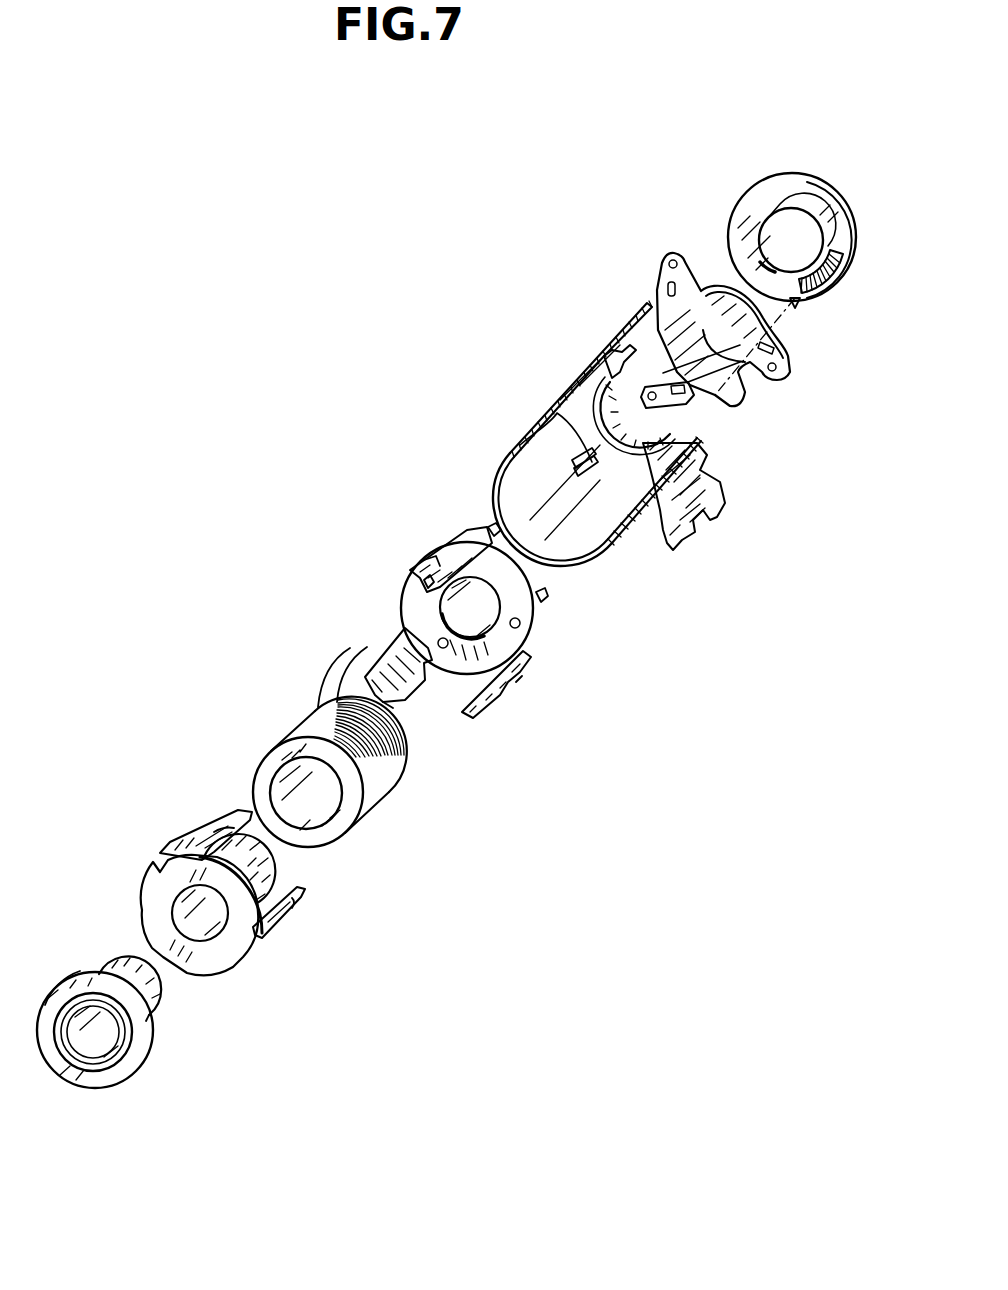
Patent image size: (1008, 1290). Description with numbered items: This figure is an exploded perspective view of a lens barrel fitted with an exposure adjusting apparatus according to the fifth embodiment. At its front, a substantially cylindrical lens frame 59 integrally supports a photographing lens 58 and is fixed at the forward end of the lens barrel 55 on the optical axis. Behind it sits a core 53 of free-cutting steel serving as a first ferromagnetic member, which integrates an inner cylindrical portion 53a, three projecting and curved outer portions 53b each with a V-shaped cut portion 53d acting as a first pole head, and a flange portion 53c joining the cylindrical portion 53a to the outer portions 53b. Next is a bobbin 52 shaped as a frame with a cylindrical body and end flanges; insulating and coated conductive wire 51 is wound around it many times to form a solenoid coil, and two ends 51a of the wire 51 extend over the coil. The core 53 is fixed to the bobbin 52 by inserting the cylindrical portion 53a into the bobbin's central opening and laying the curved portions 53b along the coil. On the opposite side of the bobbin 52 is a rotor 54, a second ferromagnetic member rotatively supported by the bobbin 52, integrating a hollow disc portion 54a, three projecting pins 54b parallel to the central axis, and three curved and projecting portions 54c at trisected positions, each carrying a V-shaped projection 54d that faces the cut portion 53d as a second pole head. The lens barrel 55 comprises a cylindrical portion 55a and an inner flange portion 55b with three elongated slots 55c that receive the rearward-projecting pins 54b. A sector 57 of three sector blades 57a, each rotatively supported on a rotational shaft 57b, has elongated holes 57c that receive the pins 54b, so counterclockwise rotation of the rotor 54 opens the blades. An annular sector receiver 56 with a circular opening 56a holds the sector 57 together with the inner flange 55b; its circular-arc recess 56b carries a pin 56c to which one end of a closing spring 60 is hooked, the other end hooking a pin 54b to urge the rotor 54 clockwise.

The insulating and coated conductive wire 51 is at (347, 764).
The ends of the insulating and coated conductive wire 51a is at (335, 700).
The bobbin 52 is at (343, 827).
The core 53 is at (222, 905).
The inner cylindrical portion 53a is at (263, 858).
The projecting and curved outer portions 53b is at (177, 833).
The flange portion 53c is at (153, 900).
The V-shaped cut portion 53d is at (200, 813).
The rotor 54 is at (468, 620).
The hollow disc portion 54a is at (525, 617).
The projecting pins 54b is at (485, 527).
The curved and projecting portions 54c is at (455, 537).
The V-shaped projection 54d is at (428, 560).
The lens barrel 55 is at (591, 448).
The cylindrical portion 55a is at (590, 520).
The inner flange portion 55b is at (630, 513).
The elongated slots 55c is at (620, 333).
The sector receiver 56 is at (787, 260).
The circular opening 56a is at (782, 222).
The circular-arc recess 56b is at (837, 243).
The pin 56c is at (793, 300).
The sector 57 is at (730, 348).
The sector blades 57a is at (723, 368).
The rotational shaft 57b is at (673, 260).
The elongated holes 57c is at (668, 290).
The photographing lens 58 is at (103, 1033).
The lens frame 59 is at (83, 1077).
The closing spring 60 is at (832, 282).